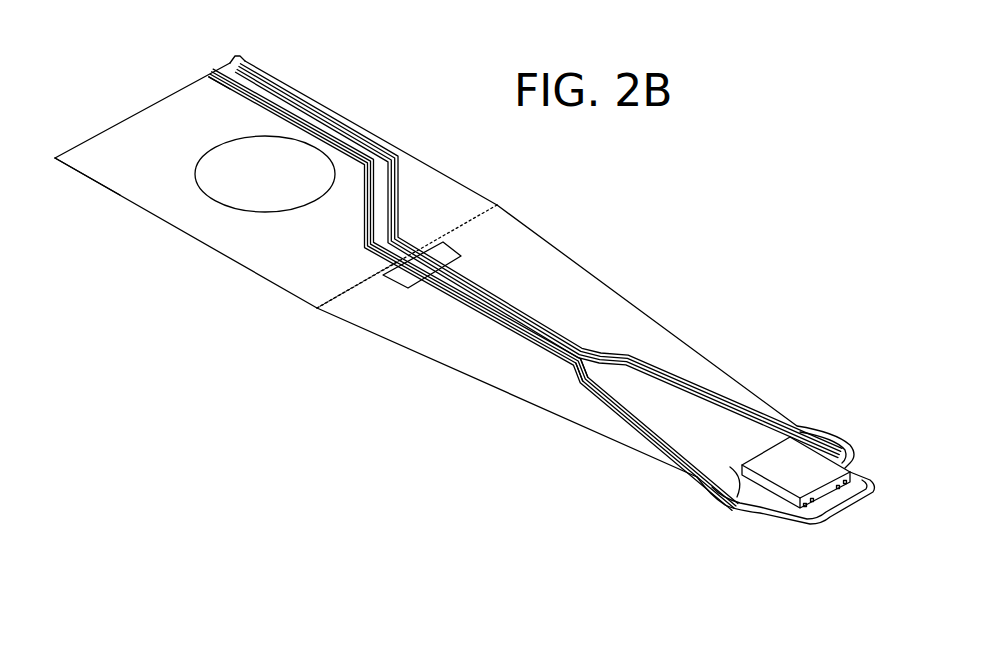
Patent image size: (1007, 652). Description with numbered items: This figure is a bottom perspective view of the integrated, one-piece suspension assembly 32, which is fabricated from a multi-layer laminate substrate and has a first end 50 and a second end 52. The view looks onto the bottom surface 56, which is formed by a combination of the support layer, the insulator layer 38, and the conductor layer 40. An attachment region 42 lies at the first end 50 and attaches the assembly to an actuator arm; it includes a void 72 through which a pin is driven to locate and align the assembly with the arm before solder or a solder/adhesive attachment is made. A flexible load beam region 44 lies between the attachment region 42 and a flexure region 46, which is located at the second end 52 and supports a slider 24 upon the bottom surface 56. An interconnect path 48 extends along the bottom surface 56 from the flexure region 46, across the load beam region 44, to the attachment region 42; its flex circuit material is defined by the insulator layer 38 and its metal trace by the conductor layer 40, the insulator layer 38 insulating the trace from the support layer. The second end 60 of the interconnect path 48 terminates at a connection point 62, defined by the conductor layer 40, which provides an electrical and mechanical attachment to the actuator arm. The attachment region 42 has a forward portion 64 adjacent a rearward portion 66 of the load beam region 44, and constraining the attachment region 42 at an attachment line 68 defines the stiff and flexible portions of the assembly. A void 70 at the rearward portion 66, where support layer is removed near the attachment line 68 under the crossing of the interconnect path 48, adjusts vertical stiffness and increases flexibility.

The suspension assembly 32 is at (106, 70).
The first end 50 is at (108, 128).
The second end of interconnect path 60 is at (233, 66).
The connection point 62 is at (213, 75).
The conductor layer 40 is at (247, 76).
The insulator layer 38 is at (262, 79).
The attachment region 42 is at (137, 167).
The void 72 is at (223, 180).
The forward portion 64 is at (283, 272).
The attachment line 68 is at (333, 300).
The void 70 is at (393, 280).
The load beam region 44 is at (437, 340).
The rearward portion 66 is at (500, 224).
The bottom surface 56 is at (546, 266).
The interconnect path 48 is at (580, 383).
The slider 24 is at (793, 480).
The flexure region 46 is at (830, 503).
The second end 52 is at (842, 507).